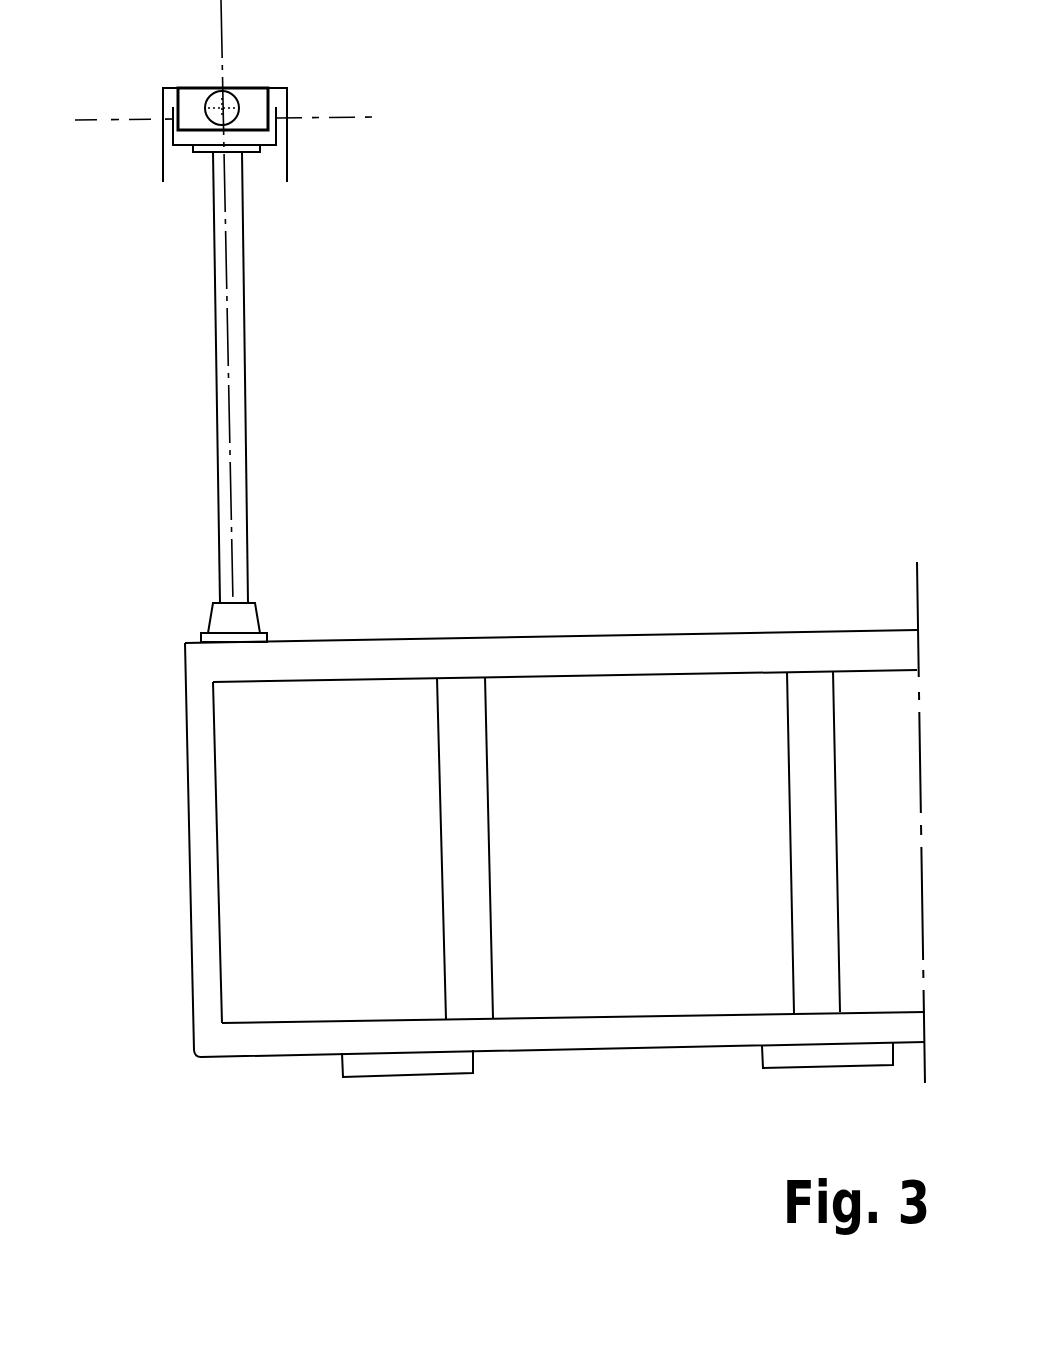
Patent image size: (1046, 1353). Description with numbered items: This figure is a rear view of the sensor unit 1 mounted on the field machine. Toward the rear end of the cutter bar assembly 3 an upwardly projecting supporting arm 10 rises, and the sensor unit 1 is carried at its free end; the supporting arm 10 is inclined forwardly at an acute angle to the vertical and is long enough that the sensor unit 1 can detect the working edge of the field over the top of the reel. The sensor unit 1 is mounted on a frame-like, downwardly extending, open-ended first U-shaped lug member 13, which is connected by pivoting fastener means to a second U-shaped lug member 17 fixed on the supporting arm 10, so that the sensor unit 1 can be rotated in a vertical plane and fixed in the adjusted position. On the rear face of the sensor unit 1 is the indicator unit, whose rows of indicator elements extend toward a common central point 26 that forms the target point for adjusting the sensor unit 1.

The sensor unit 1 is at (345, 91).
The cutter bar assembly 3 is at (397, 638).
The supporting arm 10 is at (242, 340).
The first U-shaped lug member 13 is at (287, 155).
The second U-shaped lug member 17 is at (178, 147).
The central point 26 is at (238, 99).